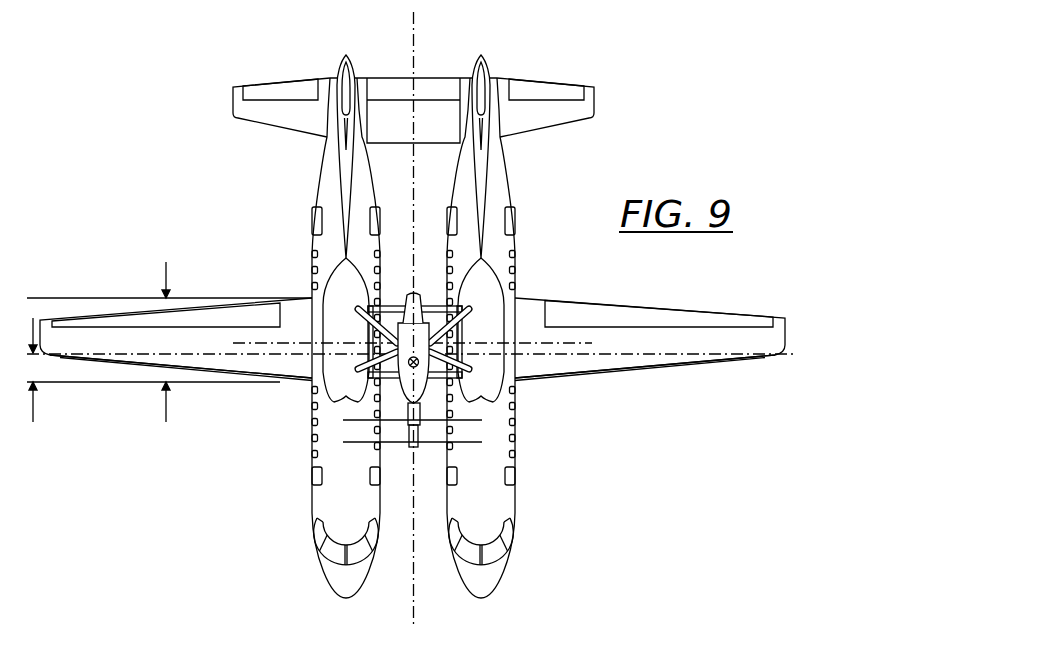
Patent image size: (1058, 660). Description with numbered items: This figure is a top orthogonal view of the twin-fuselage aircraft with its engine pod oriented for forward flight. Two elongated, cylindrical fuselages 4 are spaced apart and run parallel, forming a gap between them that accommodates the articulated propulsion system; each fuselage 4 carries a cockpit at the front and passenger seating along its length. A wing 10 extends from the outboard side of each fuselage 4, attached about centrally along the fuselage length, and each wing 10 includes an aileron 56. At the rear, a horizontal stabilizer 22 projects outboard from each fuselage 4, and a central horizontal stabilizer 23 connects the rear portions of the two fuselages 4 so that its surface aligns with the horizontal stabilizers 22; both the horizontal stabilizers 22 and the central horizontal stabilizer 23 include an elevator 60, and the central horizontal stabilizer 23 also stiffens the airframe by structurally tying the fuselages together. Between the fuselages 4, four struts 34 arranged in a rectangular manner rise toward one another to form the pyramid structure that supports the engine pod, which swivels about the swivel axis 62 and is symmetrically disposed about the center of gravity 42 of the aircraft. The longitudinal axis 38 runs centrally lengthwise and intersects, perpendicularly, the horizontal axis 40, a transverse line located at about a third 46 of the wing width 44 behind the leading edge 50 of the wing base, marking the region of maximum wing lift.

The fuselage 4 is at (311, 505).
The wing 10 is at (303, 298).
The horizontal stabilizer 22 is at (252, 123).
The central horizontal stabilizer 23 is at (441, 143).
The strut 34 is at (462, 346).
The longitudinal axis 38 is at (415, 600).
The horizontal axis 40 is at (673, 362).
The center of gravity 42 is at (410, 366).
The wing width 44 is at (166, 270).
The third of the wing width 46 is at (33, 402).
The leading edge 50 is at (85, 363).
The aileron 56 is at (268, 299).
The elevator 60 is at (266, 78).
The swivel axis 62 is at (523, 342).